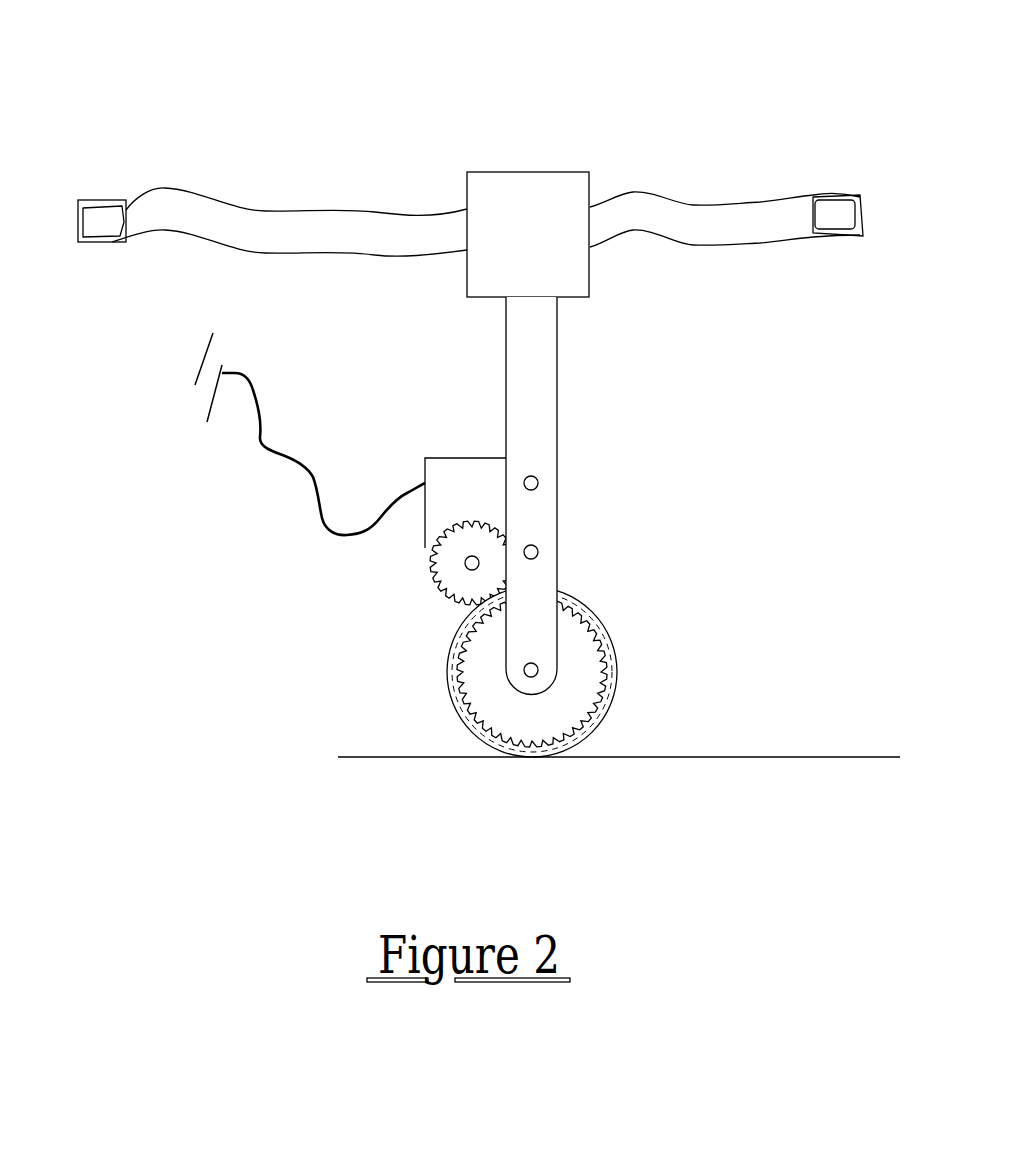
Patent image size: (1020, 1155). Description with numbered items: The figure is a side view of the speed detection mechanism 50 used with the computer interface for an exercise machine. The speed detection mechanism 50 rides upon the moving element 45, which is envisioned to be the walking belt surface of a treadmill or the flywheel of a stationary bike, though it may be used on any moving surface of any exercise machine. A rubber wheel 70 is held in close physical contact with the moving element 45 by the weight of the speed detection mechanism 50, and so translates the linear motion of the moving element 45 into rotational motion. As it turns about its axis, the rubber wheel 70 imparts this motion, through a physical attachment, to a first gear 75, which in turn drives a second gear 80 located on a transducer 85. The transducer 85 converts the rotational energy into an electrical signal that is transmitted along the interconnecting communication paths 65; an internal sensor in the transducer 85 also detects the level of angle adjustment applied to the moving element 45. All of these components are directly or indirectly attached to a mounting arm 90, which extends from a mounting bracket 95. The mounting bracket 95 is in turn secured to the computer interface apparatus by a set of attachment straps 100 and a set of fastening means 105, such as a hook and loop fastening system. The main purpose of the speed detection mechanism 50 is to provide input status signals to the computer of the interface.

The moving element 45 is at (790, 756).
The speed detection mechanism 50 is at (232, 652).
The interconnecting communication paths 65 is at (293, 462).
The rubber wheel 70 is at (613, 643).
The first gear 75 is at (572, 632).
The second gear 80 is at (457, 585).
The transducer 85 is at (450, 467).
The mounting arm 90 is at (542, 382).
The mounting bracket 95 is at (523, 185).
The attachment straps 100 is at (253, 223).
The fastening means 105 is at (105, 217).